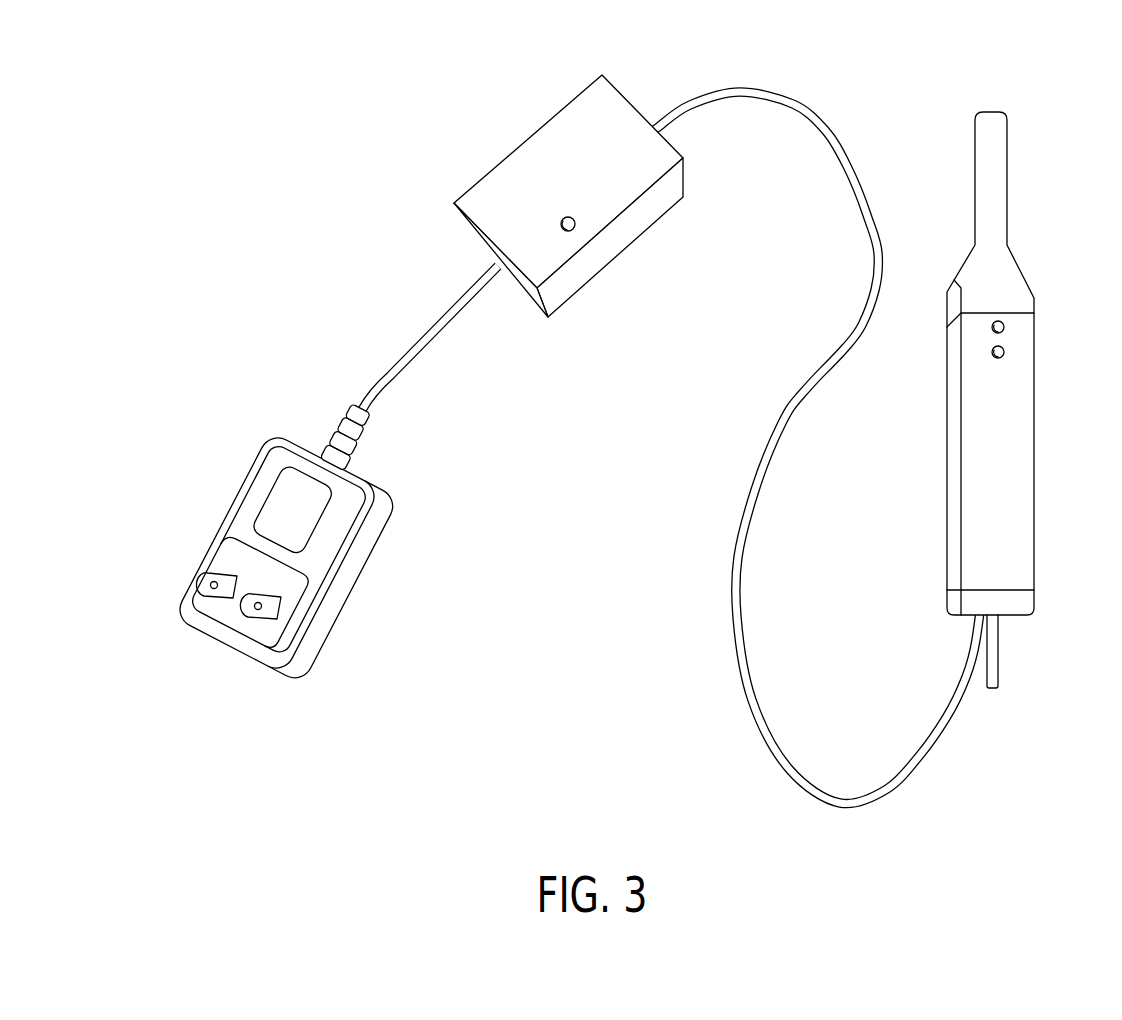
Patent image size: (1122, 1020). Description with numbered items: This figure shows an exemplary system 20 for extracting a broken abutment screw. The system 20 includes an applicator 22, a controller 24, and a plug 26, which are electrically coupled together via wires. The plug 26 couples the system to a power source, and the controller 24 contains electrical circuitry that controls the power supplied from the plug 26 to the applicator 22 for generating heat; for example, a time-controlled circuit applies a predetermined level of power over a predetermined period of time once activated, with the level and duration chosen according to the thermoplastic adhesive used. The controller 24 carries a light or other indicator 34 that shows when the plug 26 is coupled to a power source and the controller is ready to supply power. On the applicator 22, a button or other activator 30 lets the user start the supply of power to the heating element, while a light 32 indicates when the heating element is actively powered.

The system 20 is at (118, 104).
The applicator 22 is at (1028, 400).
The controller 24 is at (568, 182).
The plug 26 is at (290, 513).
The activator 30 is at (1005, 350).
The light 32 is at (1005, 325).
The indicator 34 is at (562, 218).